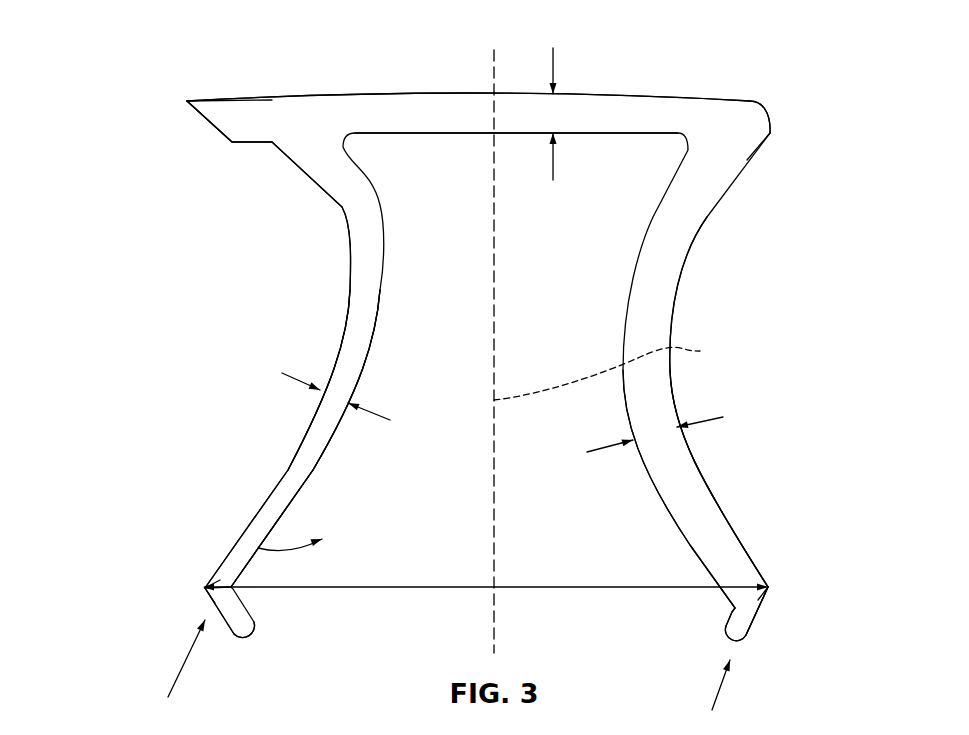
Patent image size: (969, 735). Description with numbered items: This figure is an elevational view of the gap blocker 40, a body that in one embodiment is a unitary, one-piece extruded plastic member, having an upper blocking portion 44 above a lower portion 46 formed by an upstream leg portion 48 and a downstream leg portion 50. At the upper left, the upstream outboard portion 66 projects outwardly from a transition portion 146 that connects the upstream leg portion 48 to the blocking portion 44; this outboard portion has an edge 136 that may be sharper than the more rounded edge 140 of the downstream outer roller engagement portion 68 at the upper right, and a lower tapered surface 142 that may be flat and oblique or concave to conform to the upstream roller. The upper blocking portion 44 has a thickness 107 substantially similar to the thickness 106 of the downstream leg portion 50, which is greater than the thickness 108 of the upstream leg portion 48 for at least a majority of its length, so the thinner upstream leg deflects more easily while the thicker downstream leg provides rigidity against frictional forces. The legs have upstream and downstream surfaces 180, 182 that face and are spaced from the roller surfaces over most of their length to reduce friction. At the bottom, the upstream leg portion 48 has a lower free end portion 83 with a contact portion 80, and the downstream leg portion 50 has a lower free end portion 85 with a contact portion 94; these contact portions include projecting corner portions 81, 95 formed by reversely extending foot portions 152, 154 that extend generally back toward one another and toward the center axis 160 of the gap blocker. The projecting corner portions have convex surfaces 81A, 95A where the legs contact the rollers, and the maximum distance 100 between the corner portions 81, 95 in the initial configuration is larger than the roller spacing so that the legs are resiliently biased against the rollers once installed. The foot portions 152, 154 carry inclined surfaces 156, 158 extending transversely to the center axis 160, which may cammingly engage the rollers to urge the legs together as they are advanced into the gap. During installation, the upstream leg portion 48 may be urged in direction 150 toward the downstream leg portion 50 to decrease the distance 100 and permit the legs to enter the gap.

The gap blocker 40 is at (449, 101).
The upper blocking portion 44 is at (608, 105).
The lower portion 46 is at (157, 558).
The upstream leg portion 48 is at (300, 472).
The downstream leg portion 50 is at (698, 508).
The upstream outboard portion 66 is at (241, 102).
The downstream outer roller engagement portion 68 is at (754, 125).
The contact portion 80 is at (200, 590).
The projecting corner portion 81 is at (203, 582).
The convex surface 81A is at (205, 578).
The lower free end portion 83 is at (167, 676).
The lower free end portion 85 is at (705, 697).
The contact portion 94 is at (768, 592).
The projecting corner portion 95 is at (770, 585).
The convex surface 95A is at (770, 588).
The maximum distance 100 is at (362, 589).
The thickness 106 is at (717, 418).
The thickness 107 is at (553, 60).
The thickness 108 is at (282, 375).
The edge 136 is at (187, 101).
The rounded edge 140 is at (770, 133).
The lower tapered surface 142 is at (208, 120).
The transition portion 146 is at (310, 160).
The direction 150 is at (263, 543).
The foot portion 152 is at (255, 620).
The foot portion 154 is at (729, 620).
The inclined surface 156 is at (232, 628).
The inclined surface 158 is at (750, 630).
The center axis 160 is at (622, 367).
The upstream surface 180 is at (338, 338).
The downstream surface 182 is at (669, 331).